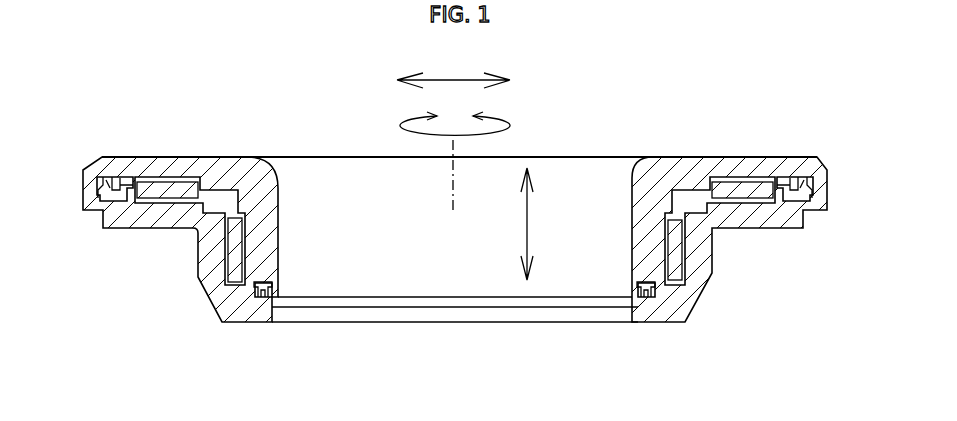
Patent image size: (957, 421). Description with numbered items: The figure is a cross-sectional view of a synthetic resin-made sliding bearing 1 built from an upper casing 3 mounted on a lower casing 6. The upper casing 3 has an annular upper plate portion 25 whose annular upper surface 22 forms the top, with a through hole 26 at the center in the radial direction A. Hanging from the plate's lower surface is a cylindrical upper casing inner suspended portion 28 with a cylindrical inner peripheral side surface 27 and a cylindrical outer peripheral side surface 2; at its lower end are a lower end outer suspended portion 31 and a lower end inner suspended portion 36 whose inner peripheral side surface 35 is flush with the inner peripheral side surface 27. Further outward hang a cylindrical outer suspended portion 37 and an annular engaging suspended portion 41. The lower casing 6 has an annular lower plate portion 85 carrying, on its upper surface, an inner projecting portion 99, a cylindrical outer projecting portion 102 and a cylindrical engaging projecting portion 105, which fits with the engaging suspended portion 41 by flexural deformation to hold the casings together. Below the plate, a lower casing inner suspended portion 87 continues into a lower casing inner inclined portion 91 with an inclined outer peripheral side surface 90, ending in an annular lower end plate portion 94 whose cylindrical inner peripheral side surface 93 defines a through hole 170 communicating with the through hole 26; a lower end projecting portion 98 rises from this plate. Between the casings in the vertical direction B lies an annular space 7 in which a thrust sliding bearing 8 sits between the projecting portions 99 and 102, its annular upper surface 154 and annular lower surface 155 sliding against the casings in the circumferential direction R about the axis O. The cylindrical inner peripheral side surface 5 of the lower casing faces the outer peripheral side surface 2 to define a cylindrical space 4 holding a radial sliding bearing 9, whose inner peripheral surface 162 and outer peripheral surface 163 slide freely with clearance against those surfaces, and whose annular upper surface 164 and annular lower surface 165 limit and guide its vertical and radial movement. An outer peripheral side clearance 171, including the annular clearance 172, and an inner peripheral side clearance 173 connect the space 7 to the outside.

The synthetic resin-made sliding bearing 1 is at (142, 288).
The cylindrical outer peripheral side surface 2 is at (222, 302).
The upper casing 3 is at (723, 152).
The cylindrical space 4 is at (233, 188).
The cylindrical inner peripheral side surface 5 is at (678, 253).
The lower casing 6 is at (115, 233).
The annular space 7 is at (208, 187).
The thrust sliding bearing 8 is at (153, 175).
The radial sliding bearing 9 is at (224, 250).
The annular upper surface 22 is at (708, 157).
The annular upper plate portion 25 is at (177, 170).
The through hole 26 is at (426, 282).
The cylindrical inner peripheral side surface 27 is at (280, 240).
The upper casing inner suspended portion 28 is at (265, 230).
The lower end outer suspended portion 31 is at (240, 302).
The cylindrical inner peripheral side surface 35 is at (585, 300).
The lower end inner suspended portion 36 is at (634, 285).
The cylindrical outer suspended portion 37 is at (793, 190).
The annular engaging suspended portion 41 is at (817, 212).
The annular lower plate portion 85 is at (745, 217).
The lower casing inner suspended portion 87 is at (207, 275).
The inclined outer peripheral side surface 90 is at (709, 288).
The lower casing inner inclined portion 91 is at (213, 312).
The cylindrical inner peripheral side surface 93 is at (490, 313).
The annular lower end plate portion 94 is at (673, 313).
The lower end projecting portion 98 is at (264, 297).
The inner projecting portion 99 is at (215, 205).
The cylindrical outer projecting portion 102 is at (133, 190).
The cylindrical engaging projecting portion 105 is at (104, 196).
The annular upper surface 154 is at (752, 185).
The annular lower surface 155 is at (162, 203).
The inner peripheral surface 162 is at (655, 257).
The outer peripheral surface 163 is at (684, 240).
The circular annular upper surface 164 is at (677, 200).
The circular annular lower surface 165 is at (700, 298).
The through hole 170 is at (378, 312).
The outer peripheral side clearance 171 is at (803, 190).
The annular clearance 172 is at (792, 215).
The inner peripheral side clearance 173 is at (230, 290).
The radial direction A is at (453, 78).
The vertical direction B is at (528, 230).
The axis O is at (455, 156).
The circumferential direction R is at (505, 121).